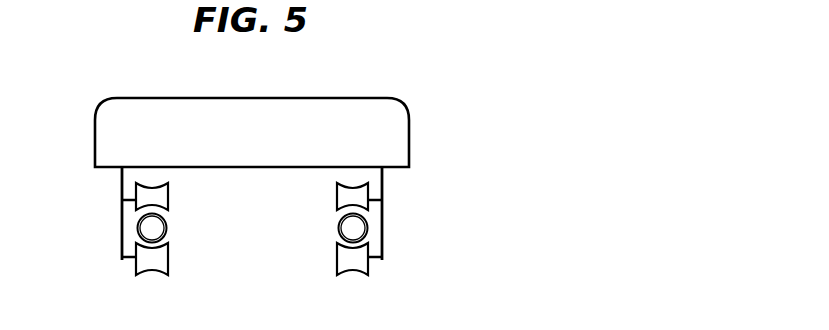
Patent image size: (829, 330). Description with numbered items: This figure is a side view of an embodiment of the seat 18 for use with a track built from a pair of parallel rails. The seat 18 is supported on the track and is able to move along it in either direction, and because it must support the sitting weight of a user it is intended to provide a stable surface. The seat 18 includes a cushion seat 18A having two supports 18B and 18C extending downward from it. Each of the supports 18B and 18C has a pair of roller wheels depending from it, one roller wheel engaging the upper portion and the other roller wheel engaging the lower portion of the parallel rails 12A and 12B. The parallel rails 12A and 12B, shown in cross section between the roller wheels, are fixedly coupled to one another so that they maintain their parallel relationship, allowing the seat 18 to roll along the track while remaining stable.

The seat 18 is at (396, 58).
The cushion seat 18A is at (250, 97).
The support 18B is at (122, 222).
The support 18C is at (383, 222).
The parallel rail 12A is at (338, 232).
The parallel rail 12B is at (167, 232).